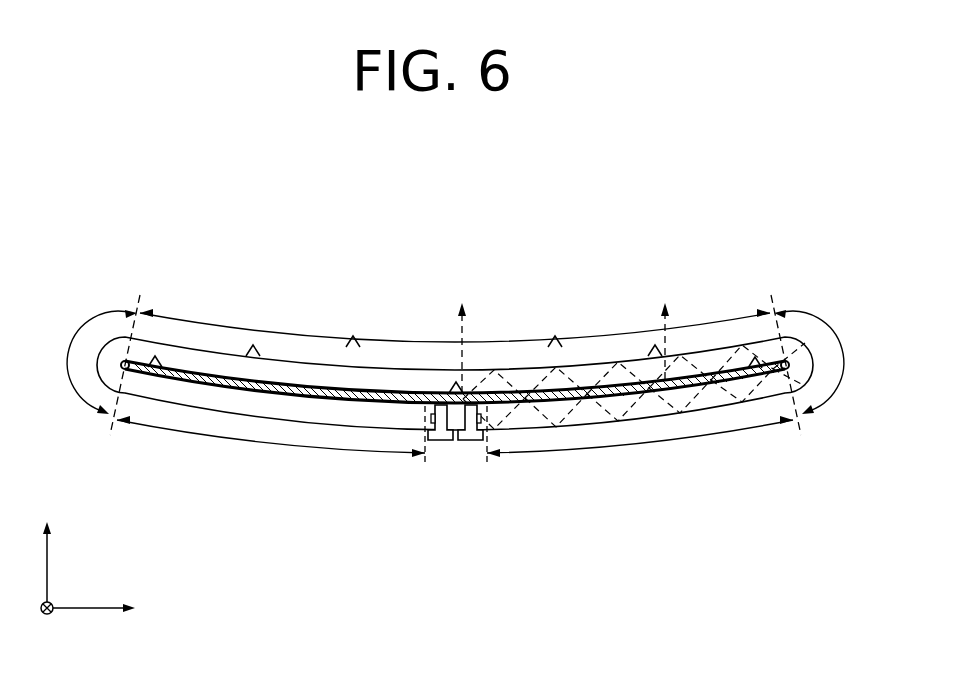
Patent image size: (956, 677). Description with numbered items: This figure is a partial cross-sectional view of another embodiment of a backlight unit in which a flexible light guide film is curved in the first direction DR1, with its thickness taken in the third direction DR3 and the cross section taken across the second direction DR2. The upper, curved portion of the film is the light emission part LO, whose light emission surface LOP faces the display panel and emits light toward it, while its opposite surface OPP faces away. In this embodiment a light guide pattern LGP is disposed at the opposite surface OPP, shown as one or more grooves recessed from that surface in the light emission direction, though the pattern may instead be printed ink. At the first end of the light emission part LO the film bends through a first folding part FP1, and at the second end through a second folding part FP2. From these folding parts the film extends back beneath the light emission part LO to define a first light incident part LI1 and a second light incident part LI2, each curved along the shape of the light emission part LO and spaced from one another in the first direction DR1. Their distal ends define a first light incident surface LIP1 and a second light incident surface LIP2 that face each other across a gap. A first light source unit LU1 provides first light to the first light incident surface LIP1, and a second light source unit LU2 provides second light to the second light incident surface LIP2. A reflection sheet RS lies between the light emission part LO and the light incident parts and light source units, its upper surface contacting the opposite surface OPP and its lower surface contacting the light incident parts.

The light guide pattern LGP is at (252, 366).
The light emission surface LOP is at (314, 362).
The opposite surface OPP is at (373, 368).
The reflection sheet RS is at (176, 378).
The light emission part LO is at (455, 348).
The second folding part FP2 is at (85, 365).
The first folding part FP1 is at (825, 365).
The second light incident part LI2 is at (271, 439).
The first light incident part LI1 is at (640, 439).
The second light source unit LU2 is at (441, 449).
The first light source unit LU1 is at (469, 449).
The second light incident surface LIP2 is at (431, 416).
The first light incident surface LIP1 is at (481, 416).
The first direction DR1 is at (111, 611).
The second direction DR2 is at (47, 625).
The third direction DR3 is at (47, 552).